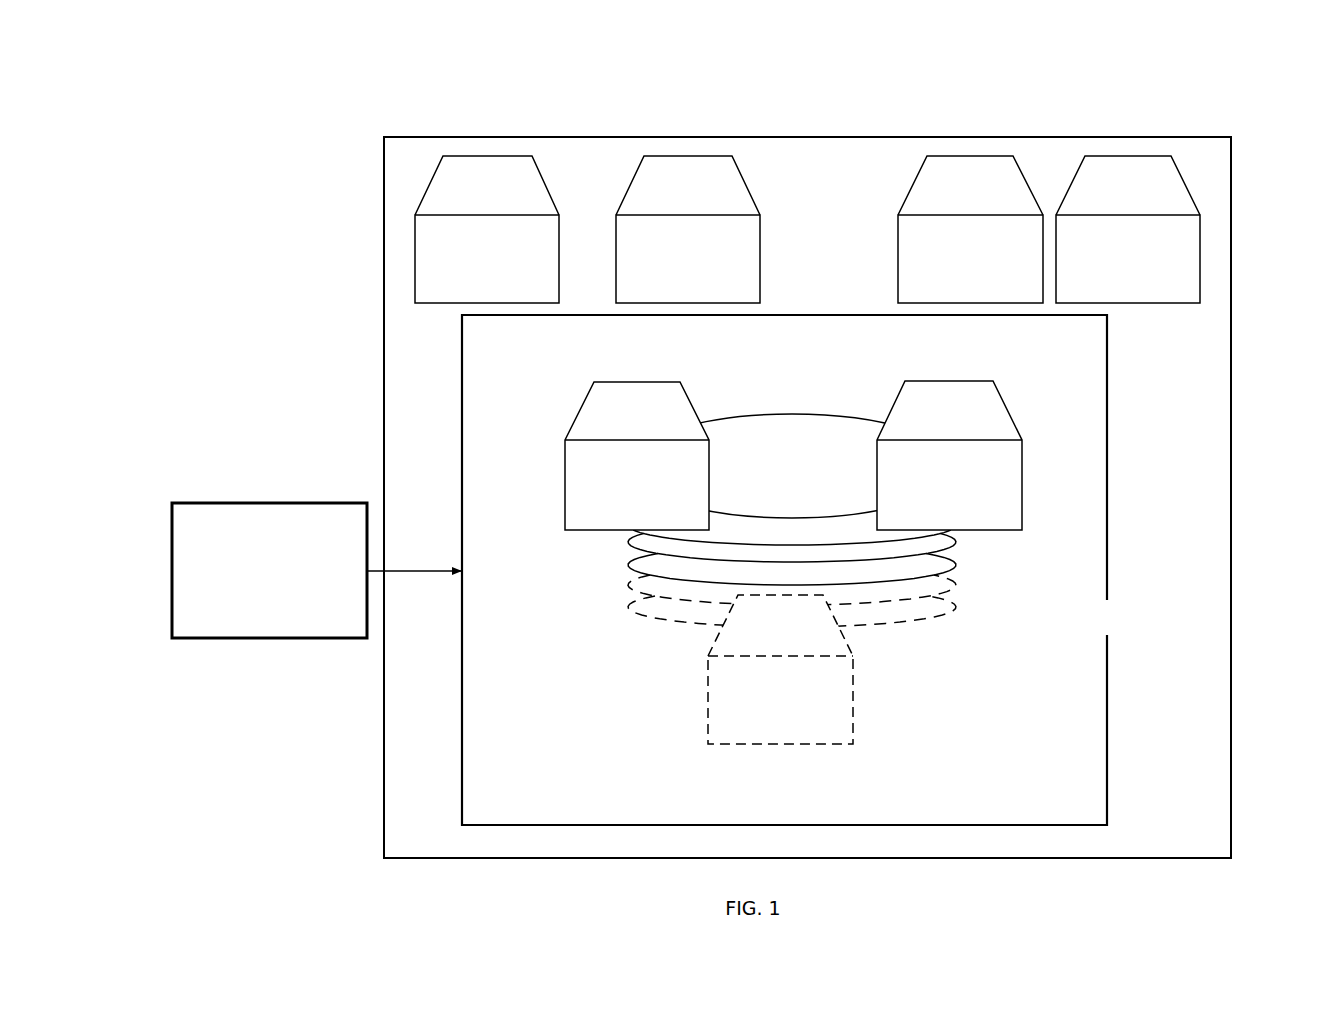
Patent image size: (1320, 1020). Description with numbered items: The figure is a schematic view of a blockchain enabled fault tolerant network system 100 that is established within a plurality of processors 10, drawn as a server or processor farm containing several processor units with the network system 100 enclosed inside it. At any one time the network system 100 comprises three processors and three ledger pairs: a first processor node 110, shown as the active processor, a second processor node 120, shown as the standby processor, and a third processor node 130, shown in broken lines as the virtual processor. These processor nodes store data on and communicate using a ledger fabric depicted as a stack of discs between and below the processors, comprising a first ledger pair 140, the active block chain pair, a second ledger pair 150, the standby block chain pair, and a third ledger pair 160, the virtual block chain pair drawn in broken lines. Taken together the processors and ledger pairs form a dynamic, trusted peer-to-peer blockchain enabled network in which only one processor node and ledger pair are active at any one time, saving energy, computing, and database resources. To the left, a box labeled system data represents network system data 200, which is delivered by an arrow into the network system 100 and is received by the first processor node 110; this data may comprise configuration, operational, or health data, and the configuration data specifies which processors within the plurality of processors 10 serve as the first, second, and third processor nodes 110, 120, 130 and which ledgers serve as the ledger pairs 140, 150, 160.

The plurality of processors 10 is at (830, 136).
The blockchain enabled fault tolerant network system 100 is at (826, 287).
The first processor node 110 is at (609, 445).
The second processor node 120 is at (984, 445).
The third processor node 130 is at (822, 688).
The first ledger pair 140 is at (810, 410).
The second ledger pair 150 is at (878, 599).
The third ledger pair 160 is at (741, 639).
The network system data 200 is at (268, 478).